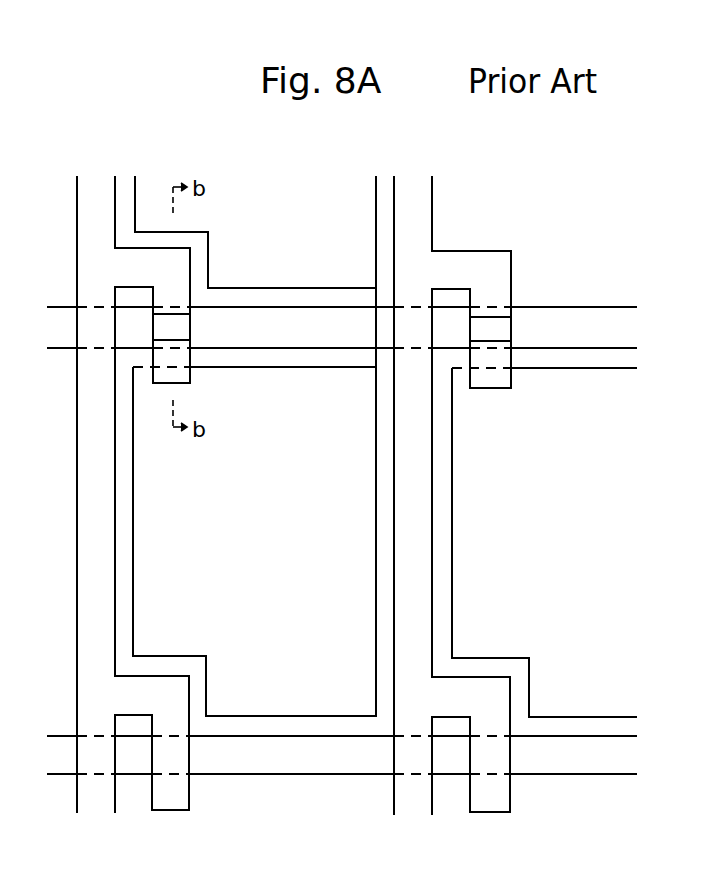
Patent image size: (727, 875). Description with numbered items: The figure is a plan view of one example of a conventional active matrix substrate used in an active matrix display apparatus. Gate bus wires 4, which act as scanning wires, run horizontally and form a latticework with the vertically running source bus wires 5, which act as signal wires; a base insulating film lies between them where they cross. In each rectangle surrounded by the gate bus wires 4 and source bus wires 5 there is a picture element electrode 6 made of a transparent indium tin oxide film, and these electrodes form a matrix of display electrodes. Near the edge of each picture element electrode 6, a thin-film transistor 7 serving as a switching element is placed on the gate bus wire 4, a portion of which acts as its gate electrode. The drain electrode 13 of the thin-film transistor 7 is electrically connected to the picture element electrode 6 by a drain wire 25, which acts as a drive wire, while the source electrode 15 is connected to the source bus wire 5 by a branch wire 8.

The gate bus wire 4 is at (311, 320).
The source bus wire 5 is at (89, 432).
The picture element electrode 6 is at (325, 457).
The thin-film transistor 7 is at (182, 328).
The branch wire 8 is at (137, 268).
The drain electrode 13 is at (168, 343).
The source electrode 15 is at (168, 313).
The drain wire 25 is at (162, 356).